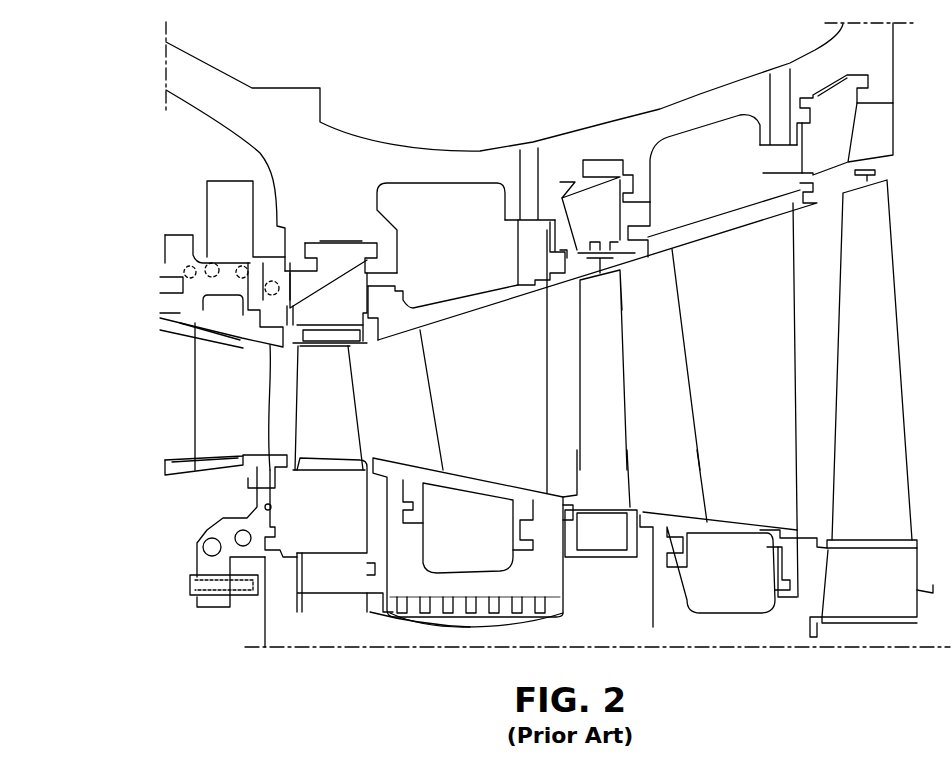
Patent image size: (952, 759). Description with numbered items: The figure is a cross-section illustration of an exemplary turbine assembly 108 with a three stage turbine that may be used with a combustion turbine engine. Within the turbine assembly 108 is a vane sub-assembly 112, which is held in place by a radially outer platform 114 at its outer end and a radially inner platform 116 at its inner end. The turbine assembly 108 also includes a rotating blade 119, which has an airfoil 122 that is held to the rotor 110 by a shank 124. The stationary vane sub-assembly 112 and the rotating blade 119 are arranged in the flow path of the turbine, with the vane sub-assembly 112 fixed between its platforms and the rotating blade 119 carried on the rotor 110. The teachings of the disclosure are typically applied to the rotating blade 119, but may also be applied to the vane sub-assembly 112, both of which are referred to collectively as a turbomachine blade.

The turbine assembly 108 is at (460, 140).
The rotor 110 is at (333, 630).
The vane sub-assembly 112 is at (467, 388).
The radially outer platform 114 is at (465, 314).
The radially inner platform 116 is at (520, 477).
The rotating blade 119 is at (297, 405).
The airfoil 122 is at (320, 384).
The shank 124 is at (333, 508).